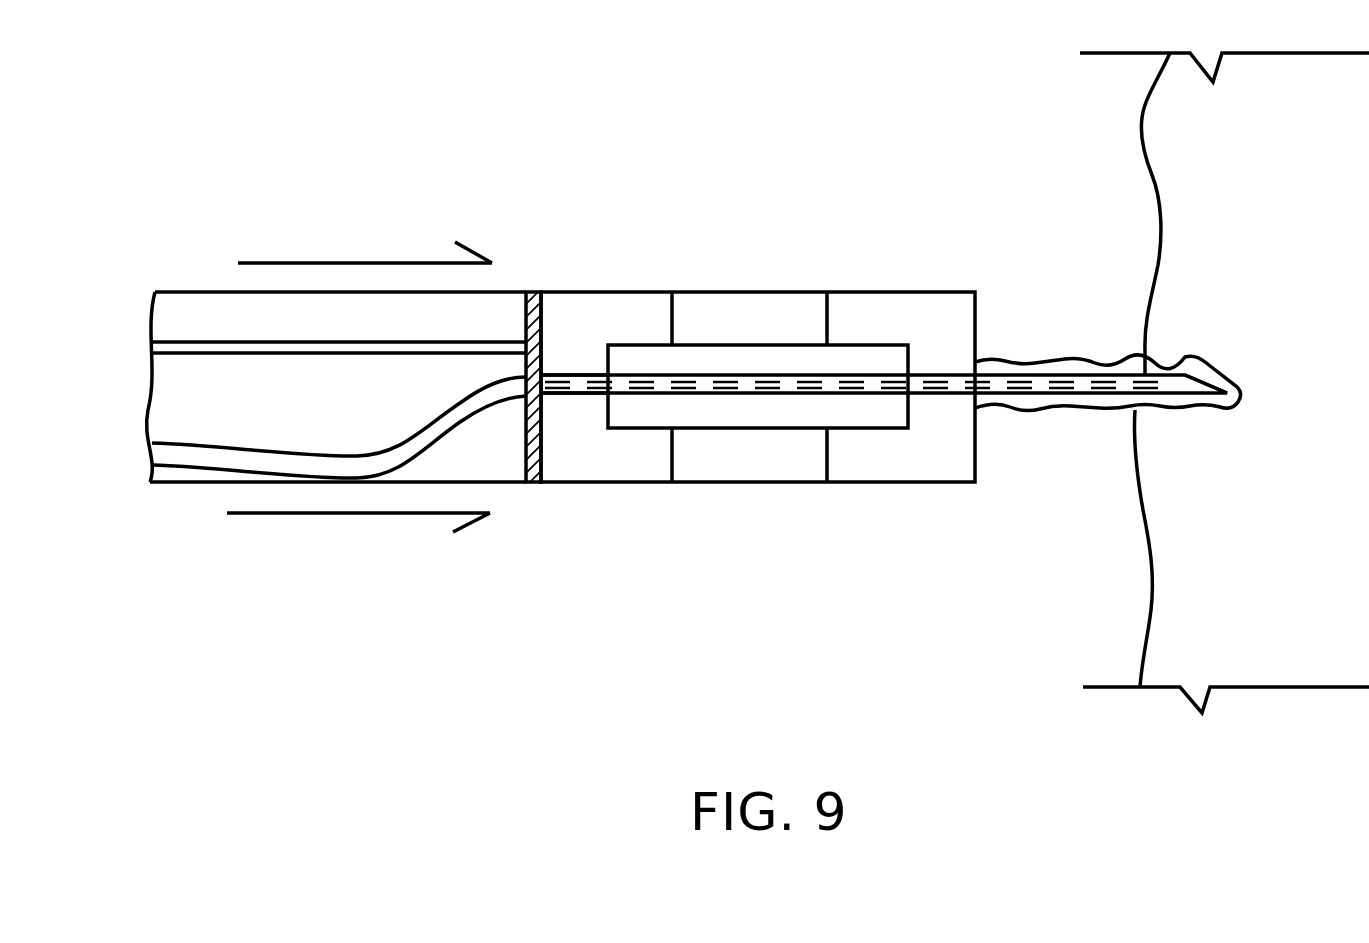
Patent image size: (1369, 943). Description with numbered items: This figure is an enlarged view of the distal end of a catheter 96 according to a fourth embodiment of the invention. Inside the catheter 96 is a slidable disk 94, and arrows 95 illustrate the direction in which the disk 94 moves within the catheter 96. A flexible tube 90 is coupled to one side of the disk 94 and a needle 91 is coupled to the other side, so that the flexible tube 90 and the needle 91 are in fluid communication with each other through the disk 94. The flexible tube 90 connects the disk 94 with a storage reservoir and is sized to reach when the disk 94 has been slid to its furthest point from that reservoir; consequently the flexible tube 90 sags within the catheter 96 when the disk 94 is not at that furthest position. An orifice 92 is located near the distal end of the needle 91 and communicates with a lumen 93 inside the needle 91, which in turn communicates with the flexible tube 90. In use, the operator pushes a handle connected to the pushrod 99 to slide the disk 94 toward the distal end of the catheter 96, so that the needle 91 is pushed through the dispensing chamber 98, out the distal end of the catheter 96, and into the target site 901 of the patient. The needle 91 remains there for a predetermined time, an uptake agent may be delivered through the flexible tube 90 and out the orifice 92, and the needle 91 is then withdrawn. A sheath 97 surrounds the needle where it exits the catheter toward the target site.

The flexible tube 90 is at (468, 430).
The needle 91 is at (582, 397).
The orifice 92 is at (1178, 403).
The lumen 93 is at (1112, 374).
The disk 94 is at (533, 292).
The arrows 95 is at (425, 263).
The catheter 96 is at (762, 292).
The sheath 97 is at (1024, 408).
The dispensing chamber 98 is at (880, 345).
The pushrod 99 is at (200, 342).
The target site 901 is at (1277, 147).